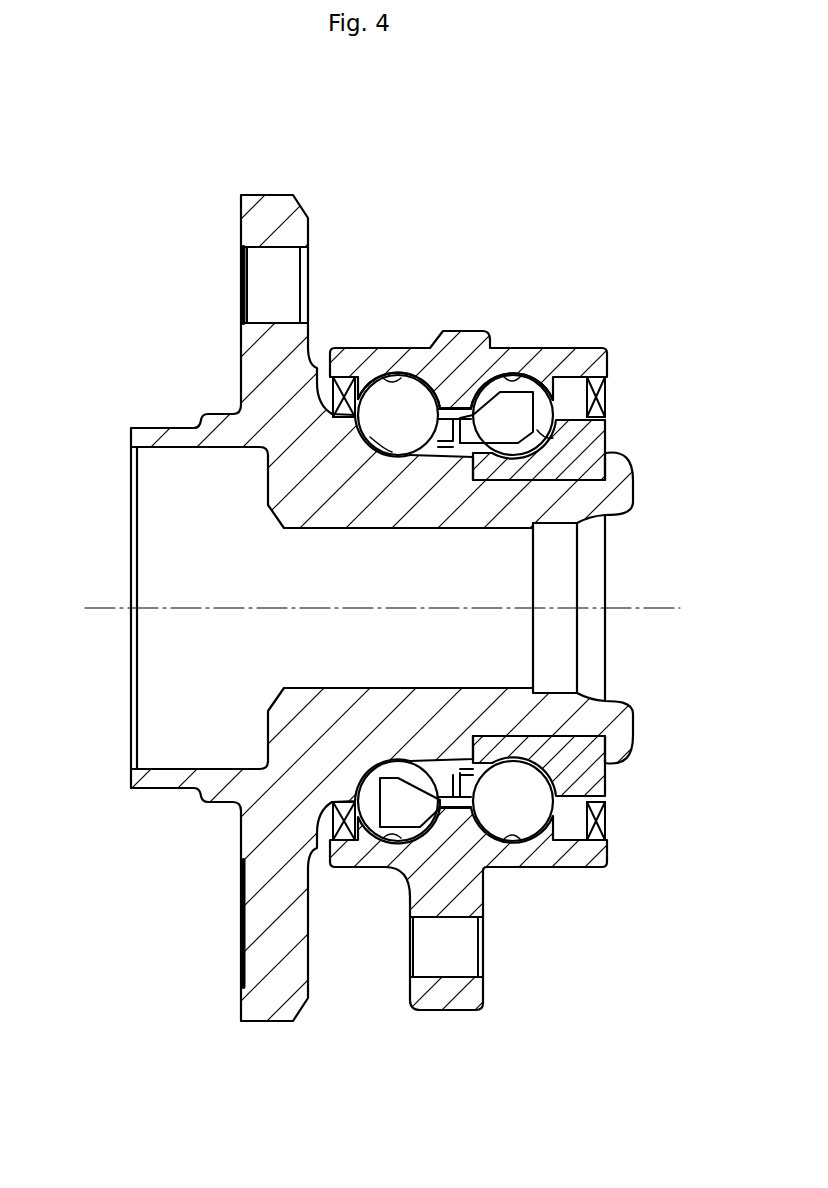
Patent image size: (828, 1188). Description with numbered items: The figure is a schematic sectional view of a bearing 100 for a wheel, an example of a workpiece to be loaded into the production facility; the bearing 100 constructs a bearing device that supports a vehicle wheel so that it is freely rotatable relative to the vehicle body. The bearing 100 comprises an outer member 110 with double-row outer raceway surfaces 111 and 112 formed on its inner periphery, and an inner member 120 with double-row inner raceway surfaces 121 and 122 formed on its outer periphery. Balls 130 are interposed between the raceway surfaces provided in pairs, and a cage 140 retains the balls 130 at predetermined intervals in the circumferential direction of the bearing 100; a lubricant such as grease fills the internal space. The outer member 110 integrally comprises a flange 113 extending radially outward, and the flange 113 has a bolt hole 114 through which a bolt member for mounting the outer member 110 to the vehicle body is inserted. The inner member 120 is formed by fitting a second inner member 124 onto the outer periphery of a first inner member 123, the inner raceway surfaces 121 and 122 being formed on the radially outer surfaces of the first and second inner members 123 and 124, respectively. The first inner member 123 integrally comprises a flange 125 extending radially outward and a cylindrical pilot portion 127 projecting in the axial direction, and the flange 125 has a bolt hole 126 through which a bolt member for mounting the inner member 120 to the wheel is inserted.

The bearing for a wheel 100 is at (172, 232).
The outer member 110 is at (466, 333).
The outer raceway surface 111 is at (374, 378).
The outer raceway surface 112 is at (525, 385).
The flange 113 is at (460, 997).
The bolt hole 114 is at (453, 917).
The inner member 120 is at (253, 400).
The inner raceway surface 121 is at (392, 432).
The inner raceway surface 122 is at (553, 427).
The first inner member 123 is at (480, 513).
The second inner member 124 is at (590, 780).
The flange 125 is at (272, 213).
The bolt hole 126 is at (262, 318).
The cylindrical pilot portion 127 is at (161, 438).
The balls 130 is at (410, 393).
The cage 140 is at (398, 813).